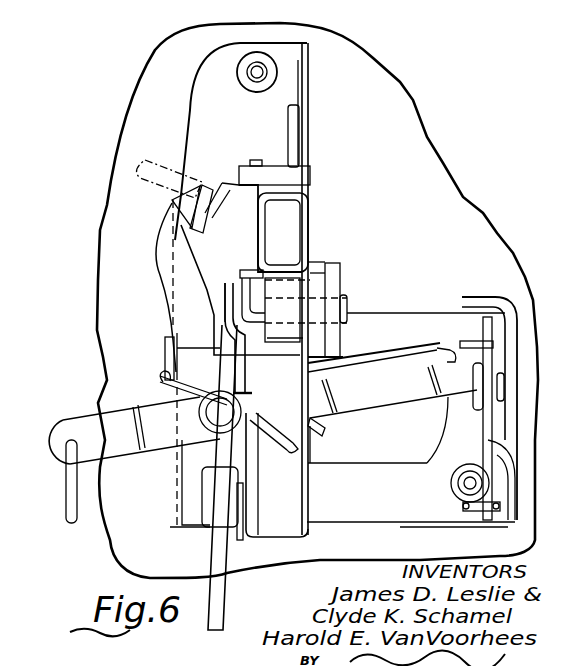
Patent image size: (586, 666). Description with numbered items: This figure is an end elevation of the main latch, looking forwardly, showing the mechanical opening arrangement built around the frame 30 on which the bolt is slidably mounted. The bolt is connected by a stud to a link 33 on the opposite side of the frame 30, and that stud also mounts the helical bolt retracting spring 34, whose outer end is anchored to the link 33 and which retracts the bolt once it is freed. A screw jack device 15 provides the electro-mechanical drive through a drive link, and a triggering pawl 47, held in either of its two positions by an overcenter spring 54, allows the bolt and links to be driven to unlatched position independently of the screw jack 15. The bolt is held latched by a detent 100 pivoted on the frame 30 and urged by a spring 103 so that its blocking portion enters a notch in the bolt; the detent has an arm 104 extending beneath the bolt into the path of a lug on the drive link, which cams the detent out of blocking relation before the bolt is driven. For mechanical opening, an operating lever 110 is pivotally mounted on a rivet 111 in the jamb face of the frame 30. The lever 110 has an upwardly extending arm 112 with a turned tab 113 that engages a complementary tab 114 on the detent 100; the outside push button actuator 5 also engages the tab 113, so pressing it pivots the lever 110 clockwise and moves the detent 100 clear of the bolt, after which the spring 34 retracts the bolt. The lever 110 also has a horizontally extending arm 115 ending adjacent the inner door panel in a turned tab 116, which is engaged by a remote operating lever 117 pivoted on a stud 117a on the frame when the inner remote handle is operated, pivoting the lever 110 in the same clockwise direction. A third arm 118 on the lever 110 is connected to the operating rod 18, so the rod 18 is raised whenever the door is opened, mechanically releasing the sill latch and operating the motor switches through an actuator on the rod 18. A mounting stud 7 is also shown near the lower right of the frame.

The outside push button actuator 5 is at (157, 160).
The mounting stud 7 is at (472, 510).
The screw jack device 15 is at (217, 607).
The operating rod 18 is at (72, 483).
The frame 30 is at (287, 96).
The link 33 is at (317, 297).
The helical bolt retracting spring 34 is at (330, 262).
The triggering pawl 47 is at (247, 487).
The overcenter spring 54 is at (243, 510).
The detent 100 is at (238, 160).
The spring 103 is at (280, 173).
The detent arm 104 is at (280, 267).
The operating lever 110 is at (166, 456).
The rivet 111 is at (197, 413).
The upwardly extending arm 112 is at (168, 278).
The turned tab 113 is at (188, 208).
The complementary tab 114 is at (210, 215).
The horizontally extending arm 115 is at (376, 400).
The turned tab 116 is at (462, 343).
The remote operating lever 117 is at (477, 432).
The stud 117a is at (477, 395).
The third arm 118 is at (65, 420).